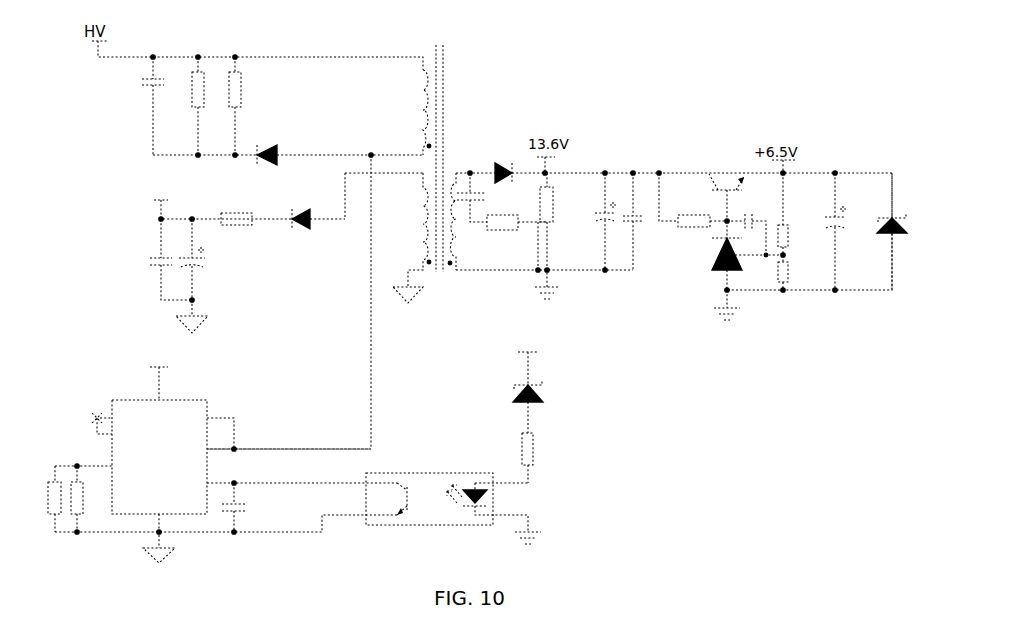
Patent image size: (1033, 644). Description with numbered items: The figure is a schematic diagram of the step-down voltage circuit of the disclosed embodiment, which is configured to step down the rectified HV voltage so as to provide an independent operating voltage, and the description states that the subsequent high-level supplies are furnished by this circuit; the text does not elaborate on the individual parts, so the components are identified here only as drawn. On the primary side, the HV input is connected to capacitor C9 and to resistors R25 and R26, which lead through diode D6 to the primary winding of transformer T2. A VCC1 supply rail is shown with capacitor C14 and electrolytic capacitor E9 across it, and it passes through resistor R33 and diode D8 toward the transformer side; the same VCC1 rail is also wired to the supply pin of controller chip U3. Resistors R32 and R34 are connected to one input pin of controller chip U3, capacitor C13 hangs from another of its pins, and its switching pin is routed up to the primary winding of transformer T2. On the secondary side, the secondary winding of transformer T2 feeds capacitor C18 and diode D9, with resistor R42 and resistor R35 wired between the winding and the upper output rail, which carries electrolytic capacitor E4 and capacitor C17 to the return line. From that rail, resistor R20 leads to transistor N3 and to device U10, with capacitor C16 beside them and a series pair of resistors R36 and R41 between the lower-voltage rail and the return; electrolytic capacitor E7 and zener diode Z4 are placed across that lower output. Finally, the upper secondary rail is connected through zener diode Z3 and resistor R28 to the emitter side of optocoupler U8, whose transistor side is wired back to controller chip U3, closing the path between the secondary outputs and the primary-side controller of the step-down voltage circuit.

The capacitor C9 is at (137, 106).
The resistor R25 is at (180, 106).
The resistor R26 is at (222, 106).
The diode D6 is at (277, 144).
The transformer T2 is at (424, 163).
The capacitor C18 is at (470, 187).
The diode D9 is at (505, 159).
The resistor R42 is at (517, 242).
The resistor R35 is at (560, 236).
The electrolytic capacitor E4 is at (592, 221).
The capacitor C17 is at (644, 221).
The resistor R20 is at (693, 200).
The transistor N3 is at (726, 184).
The thyristor/regulator U10 is at (732, 270).
The capacitor C16 is at (746, 227).
The resistor R36 is at (796, 217).
The resistor R41 is at (796, 276).
The electrolytic capacitor E7 is at (845, 231).
The zener diode Z4 is at (900, 231).
The VCC1 supply rail VCC1 is at (230, 201).
The resistor R33 is at (235, 209).
The diode D8 is at (296, 205).
The capacitor C14 is at (150, 259).
The electrolytic capacitor E9 is at (202, 276).
The controller chip U3 (PN8149) U3 is at (226, 460).
The resistor R32 is at (37, 502).
The resistor R34 is at (92, 502).
The capacitor C13 is at (255, 507).
The optocoupler U8 is at (453, 499).
The resistor R28 is at (545, 442).
The zener diode Z3 is at (528, 368).